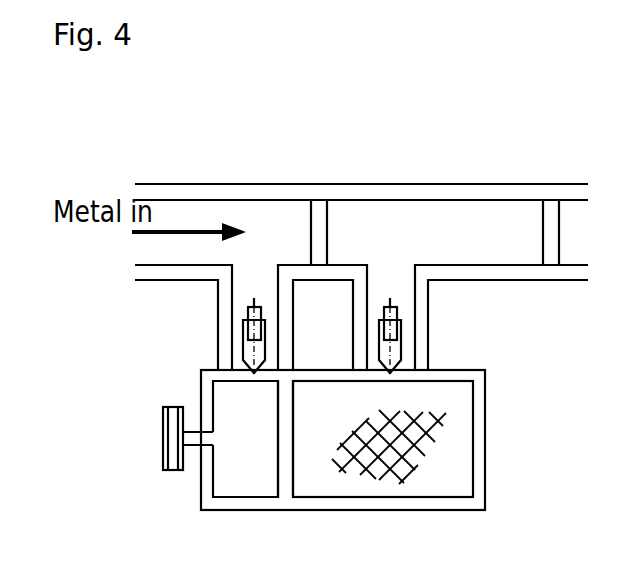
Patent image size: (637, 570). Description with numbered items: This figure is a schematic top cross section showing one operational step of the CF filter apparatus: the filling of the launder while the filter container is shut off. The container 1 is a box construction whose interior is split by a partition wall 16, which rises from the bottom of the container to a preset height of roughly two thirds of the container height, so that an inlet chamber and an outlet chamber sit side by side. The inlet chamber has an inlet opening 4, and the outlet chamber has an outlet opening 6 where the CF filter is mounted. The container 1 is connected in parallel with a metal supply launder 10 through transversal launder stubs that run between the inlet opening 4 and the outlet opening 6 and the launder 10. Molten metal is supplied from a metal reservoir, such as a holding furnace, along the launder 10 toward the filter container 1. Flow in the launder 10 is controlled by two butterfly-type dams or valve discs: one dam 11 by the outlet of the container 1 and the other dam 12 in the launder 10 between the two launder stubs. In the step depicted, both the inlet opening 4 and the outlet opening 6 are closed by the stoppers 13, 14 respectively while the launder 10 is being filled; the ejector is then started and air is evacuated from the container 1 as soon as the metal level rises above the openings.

The container 1 is at (487, 441).
The inlet opening 4 is at (255, 382).
The outlet opening 6 is at (389, 381).
The metal supply launder 10 is at (361, 214).
The dam 11 is at (297, 191).
The dam 12 is at (537, 196).
The stopper 13 is at (402, 331).
The stopper 14 is at (246, 347).
The partition wall 16 is at (285, 449).